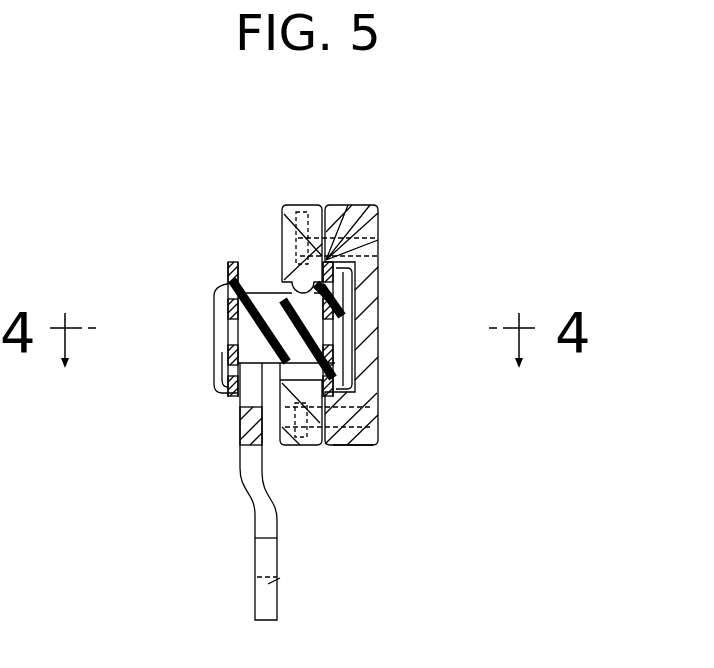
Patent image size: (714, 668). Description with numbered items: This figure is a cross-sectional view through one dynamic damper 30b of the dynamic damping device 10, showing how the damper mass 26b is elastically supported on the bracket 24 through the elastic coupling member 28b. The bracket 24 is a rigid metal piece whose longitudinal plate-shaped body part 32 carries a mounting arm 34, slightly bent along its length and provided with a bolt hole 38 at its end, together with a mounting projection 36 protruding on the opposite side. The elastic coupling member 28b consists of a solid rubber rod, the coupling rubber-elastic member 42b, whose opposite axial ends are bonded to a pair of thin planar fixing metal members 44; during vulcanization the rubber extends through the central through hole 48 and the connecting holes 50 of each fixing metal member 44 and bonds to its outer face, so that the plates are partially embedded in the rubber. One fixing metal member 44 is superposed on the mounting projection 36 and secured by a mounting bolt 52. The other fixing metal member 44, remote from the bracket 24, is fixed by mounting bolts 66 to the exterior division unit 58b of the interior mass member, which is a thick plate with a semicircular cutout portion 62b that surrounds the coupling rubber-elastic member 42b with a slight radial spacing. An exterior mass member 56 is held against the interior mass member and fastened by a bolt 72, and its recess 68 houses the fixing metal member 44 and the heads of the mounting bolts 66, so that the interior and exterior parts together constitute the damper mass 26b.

The dynamic damping device 10 is at (415, 181).
The bracket 24 is at (232, 462).
The damper mass 26b is at (348, 454).
The elastic coupling member 28b is at (247, 262).
The dynamic damper 30b is at (401, 214).
The body part 32 is at (240, 434).
The mounting arm 34 is at (255, 499).
The mounting projection 36 is at (228, 397).
The bolt hole 38 is at (282, 577).
The coupling rubber-elastic member 42b is at (272, 307).
The fixing metal member 44 is at (226, 263).
The central through hole 48 is at (228, 335).
The connecting hole 50 is at (228, 293).
The mounting bolt 52 is at (212, 378).
The exterior mass member 56 is at (365, 443).
The exterior division unit 58b is at (312, 207).
The cutout portion 62b is at (345, 212).
The mounting bolt 66 is at (355, 275).
The recess 68 is at (348, 308).
The bolt 72 is at (299, 205).